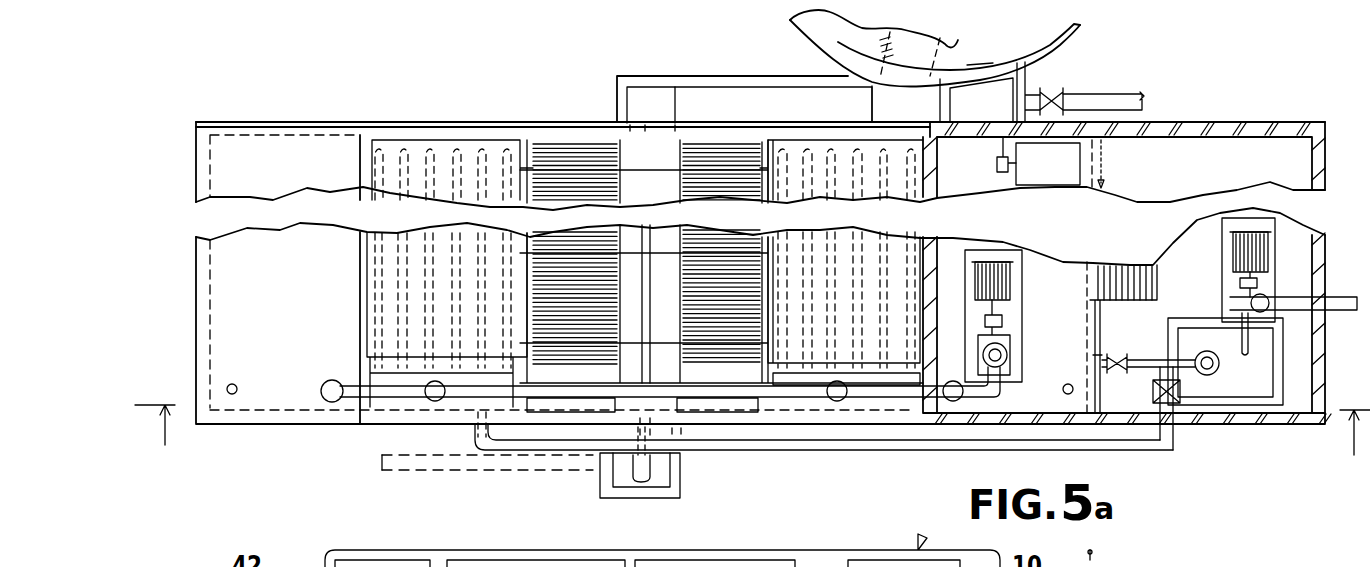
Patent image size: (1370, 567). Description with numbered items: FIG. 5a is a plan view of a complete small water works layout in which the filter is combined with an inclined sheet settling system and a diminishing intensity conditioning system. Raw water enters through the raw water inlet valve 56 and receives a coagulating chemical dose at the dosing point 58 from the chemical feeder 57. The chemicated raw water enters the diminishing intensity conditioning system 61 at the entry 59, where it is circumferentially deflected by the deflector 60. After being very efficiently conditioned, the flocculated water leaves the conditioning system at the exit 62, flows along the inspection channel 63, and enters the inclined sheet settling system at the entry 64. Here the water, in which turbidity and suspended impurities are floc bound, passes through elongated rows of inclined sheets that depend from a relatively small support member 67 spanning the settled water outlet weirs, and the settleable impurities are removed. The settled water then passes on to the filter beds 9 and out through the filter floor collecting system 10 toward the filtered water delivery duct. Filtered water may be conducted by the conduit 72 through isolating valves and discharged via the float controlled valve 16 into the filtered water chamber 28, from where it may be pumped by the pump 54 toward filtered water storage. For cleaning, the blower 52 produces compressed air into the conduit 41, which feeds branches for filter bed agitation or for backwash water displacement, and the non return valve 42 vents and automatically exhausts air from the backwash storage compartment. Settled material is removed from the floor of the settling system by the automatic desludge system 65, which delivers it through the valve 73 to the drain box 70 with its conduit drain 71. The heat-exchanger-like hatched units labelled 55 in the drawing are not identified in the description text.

The filter beds 9 is at (643, 320).
The filter floor collecting system 10 is at (477, 317).
The float controlled valve 16 is at (1218, 366).
The filtered water chamber 28 is at (1267, 355).
The conduit 41 is at (806, 412).
The non return valve 42 is at (237, 385).
The blower 52 is at (1008, 352).
The pump 54 is at (1223, 298).
The heat exchanger coil 55 is at (566, 158).
The raw water inlet valve 56 is at (1080, 95).
The chemical feeder 57 is at (1048, 164).
The chemical dosing point 58 is at (1017, 100).
The conditioning system entry 59 is at (1000, 92).
The circumferential deflector 60 is at (980, 67).
The diminishing intensity conditioning system 61 is at (1058, 60).
The conditioning system exit 62 is at (926, 86).
The inspection channel 63 is at (773, 104).
The settling system entry 64 is at (642, 125).
The automatic desludge system 65 is at (631, 310).
The support member 67 is at (672, 176).
The drain box 70 is at (682, 470).
The conduit drain 71 is at (548, 474).
The conduit 72 is at (870, 457).
The valve 73 is at (640, 452).